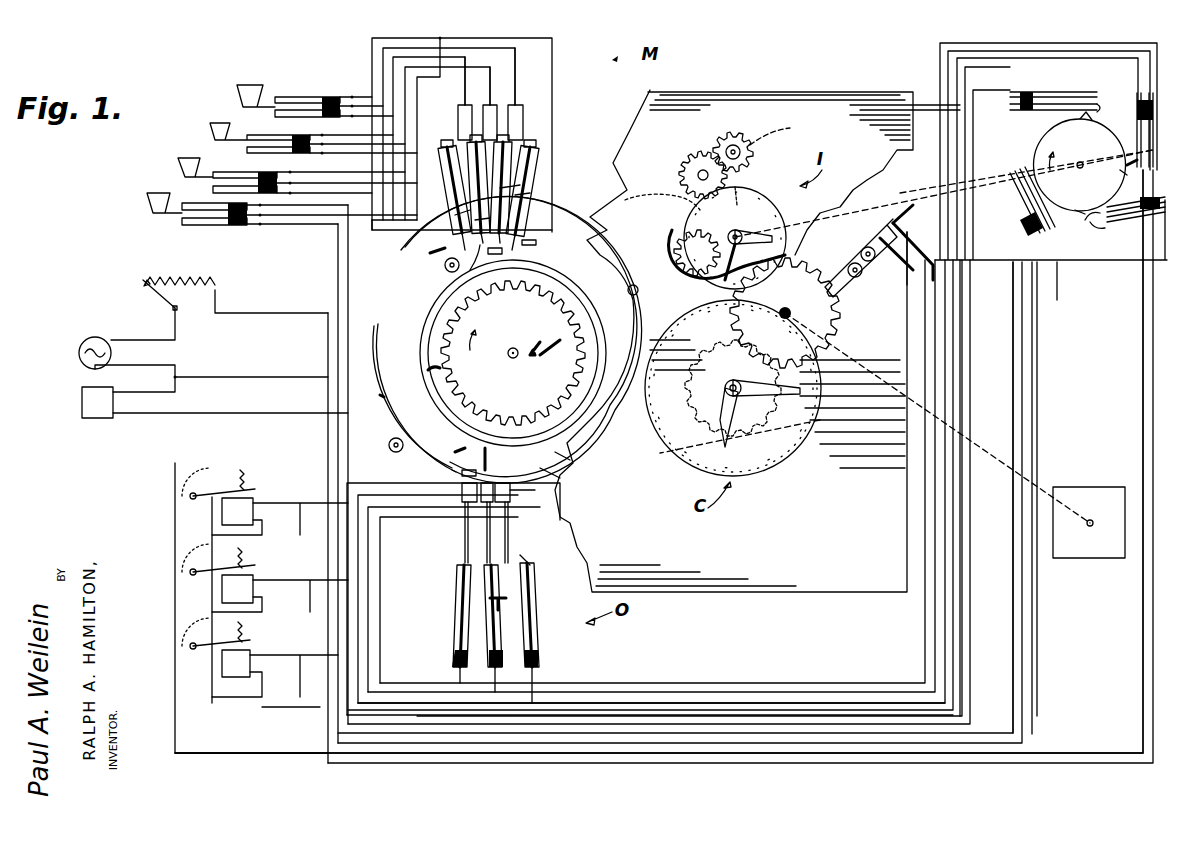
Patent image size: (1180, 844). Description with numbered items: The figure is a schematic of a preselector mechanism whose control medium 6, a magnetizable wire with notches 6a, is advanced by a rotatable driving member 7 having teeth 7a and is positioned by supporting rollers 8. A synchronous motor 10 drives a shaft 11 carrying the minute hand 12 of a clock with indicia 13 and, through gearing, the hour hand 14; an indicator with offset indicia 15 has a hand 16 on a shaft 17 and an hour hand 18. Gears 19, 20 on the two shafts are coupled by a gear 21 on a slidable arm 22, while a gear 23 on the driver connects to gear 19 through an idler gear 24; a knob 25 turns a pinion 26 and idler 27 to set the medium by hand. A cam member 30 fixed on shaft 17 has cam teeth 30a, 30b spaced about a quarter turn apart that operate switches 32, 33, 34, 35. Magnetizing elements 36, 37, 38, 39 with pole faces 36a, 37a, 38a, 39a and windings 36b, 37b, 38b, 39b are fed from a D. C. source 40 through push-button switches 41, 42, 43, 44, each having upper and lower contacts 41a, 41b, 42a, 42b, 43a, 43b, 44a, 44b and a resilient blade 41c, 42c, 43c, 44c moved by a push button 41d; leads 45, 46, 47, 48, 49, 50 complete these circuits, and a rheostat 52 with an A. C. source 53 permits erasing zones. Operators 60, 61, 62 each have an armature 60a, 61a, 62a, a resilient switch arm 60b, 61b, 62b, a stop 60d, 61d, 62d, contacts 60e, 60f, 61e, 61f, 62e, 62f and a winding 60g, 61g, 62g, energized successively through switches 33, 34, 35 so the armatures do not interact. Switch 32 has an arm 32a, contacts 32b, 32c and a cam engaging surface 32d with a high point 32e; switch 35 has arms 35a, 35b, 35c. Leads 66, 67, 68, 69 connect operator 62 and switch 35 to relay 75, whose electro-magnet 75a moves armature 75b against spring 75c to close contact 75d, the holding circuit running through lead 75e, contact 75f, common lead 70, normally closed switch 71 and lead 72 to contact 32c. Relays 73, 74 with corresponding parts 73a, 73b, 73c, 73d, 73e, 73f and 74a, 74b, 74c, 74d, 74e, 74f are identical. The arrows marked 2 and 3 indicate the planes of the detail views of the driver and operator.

The stepping gear wheel 2 is at (540, 342).
The pawl 3 is at (483, 448).
The control medium 6 is at (378, 350).
The notches 6a is at (382, 398).
The rotatable driving member 7 is at (430, 371).
The teeth 7a is at (432, 392).
The supporting rollers 8 is at (445, 270).
The motor 10 is at (1100, 487).
The shaft 11 is at (1003, 480).
The minute hand 12 is at (800, 372).
The indicia 13 is at (808, 445).
The hour hand 14 is at (700, 455).
The indicia 15 is at (775, 208).
The hand 16 is at (772, 238).
The shaft 17 is at (903, 200).
The hour hand 18 is at (700, 285).
The gear 19 is at (740, 190).
The gear 20 is at (670, 458).
The gear 21 is at (815, 330).
The slidably mounted arm 22 is at (848, 258).
The gear 23 is at (600, 415).
The idler gear 24 is at (660, 215).
The manually operable knob 25 is at (748, 138).
The pinion 26 is at (780, 135).
The idler 27 is at (680, 172).
The cam member 30 is at (1034, 150).
The cam surface 30a is at (1080, 210).
The cam surface 30b is at (1122, 172).
The cam operated switch 32 is at (1112, 230).
The switch arm 32a is at (1120, 225).
The contact 32b is at (1114, 262).
The contact 32c is at (1122, 210).
The cam engaging surface 32d is at (1085, 220).
The high point 32e is at (1095, 228).
The switch 33 is at (1012, 228).
The switch 34 is at (1052, 85).
The switch 35 is at (1120, 140).
The switch arm 35a is at (1135, 97).
The arm 35b is at (1137, 125).
The arm 35c is at (1137, 155).
The magnetizing element 36 is at (452, 195).
The pole face 36a is at (430, 253).
The energizing winding 36b is at (455, 215).
The magnetizing element 37 is at (463, 172).
The pole face 37a is at (470, 270).
The energizing winding 37b is at (475, 220).
The magnetizing element 38 is at (508, 172).
The pole face 38a is at (495, 257).
The energizing winding 38b is at (520, 185).
The magnetizing element 39 is at (538, 148).
The pole face 39a is at (530, 240).
The energizing winding 39b is at (530, 193).
The D. C. source 40 is at (82, 405).
The switch 41 is at (240, 92).
The upper stationary contact 41a is at (280, 97).
The lower stationary contact 41b is at (275, 113).
The resilient blade 41c is at (306, 100).
The push button 41d is at (250, 84).
The switch 42 is at (205, 130).
The upper stationary contact 42a is at (240, 135).
The lower stationary contact 42b is at (250, 150).
The resilient blade 42c is at (290, 137).
The switch 43 is at (172, 175).
The upper stationary contact 43a is at (178, 170).
The lower stationary contact 43b is at (230, 188).
The resilient blade 43c is at (262, 174).
The switch 44 is at (143, 210).
The top contact 44a is at (165, 222).
The lower contact 44b is at (188, 226).
The switch blade 44c is at (212, 226).
The lead 45 is at (338, 437).
The lead 46 is at (370, 128).
The lead 47 is at (467, 73).
The lead 48 is at (493, 83).
The lead 49 is at (520, 93).
The lead 50 is at (405, 280).
The rheostat 52 is at (140, 282).
The A. C. source 53 is at (79, 355).
The operator 60 is at (516, 493).
The armature 60a is at (518, 558).
The resilient switch arm 60b is at (535, 610).
The stop 60d is at (540, 478).
The contact 60e is at (522, 565).
The contact 60f is at (530, 570).
The winding 60g is at (512, 498).
The operator 61 is at (480, 500).
The armature 61a is at (487, 560).
The resilient switch arm 61b is at (490, 648).
The stop 61d is at (555, 452).
The contact 61e is at (505, 600).
The contact 61f is at (500, 600).
The winding 61g is at (487, 520).
The operator 62 is at (455, 495).
The armature 62a is at (465, 560).
The resilient switch arm 62b is at (455, 640).
The stop 62d is at (455, 452).
The contact 62e is at (462, 583).
The contact 62f is at (465, 598).
The winding 62g is at (460, 474).
The lead 66 is at (385, 480).
The leads 67 is at (1033, 48).
The lead 68 is at (1040, 42).
The lead 69 is at (410, 678).
The common lead 70 is at (180, 753).
The normally closed switch 71 is at (905, 230).
The lead 72 is at (1066, 263).
The relay 73 is at (248, 675).
The electro-magnet 73a is at (250, 668).
The armature 73b is at (250, 641).
The light tension spring 73c is at (245, 628).
The contact 73d is at (212, 656).
The lead 73e is at (212, 697).
The contact 73f is at (196, 646).
The relay 74 is at (210, 592).
The electro-magnet 74a is at (255, 594).
The armature 74b is at (248, 565).
The light tension spring 74c is at (226, 554).
The contact 74d is at (212, 582).
The lead 74e is at (212, 605).
The contact 74f is at (196, 572).
The relay 75 is at (262, 492).
The electro-magnet 75a is at (260, 516).
The armature 75b is at (255, 489).
The light tension spring 75c is at (250, 474).
The contact 75d is at (212, 510).
The lead 75e is at (212, 525).
The contact 75f is at (196, 496).